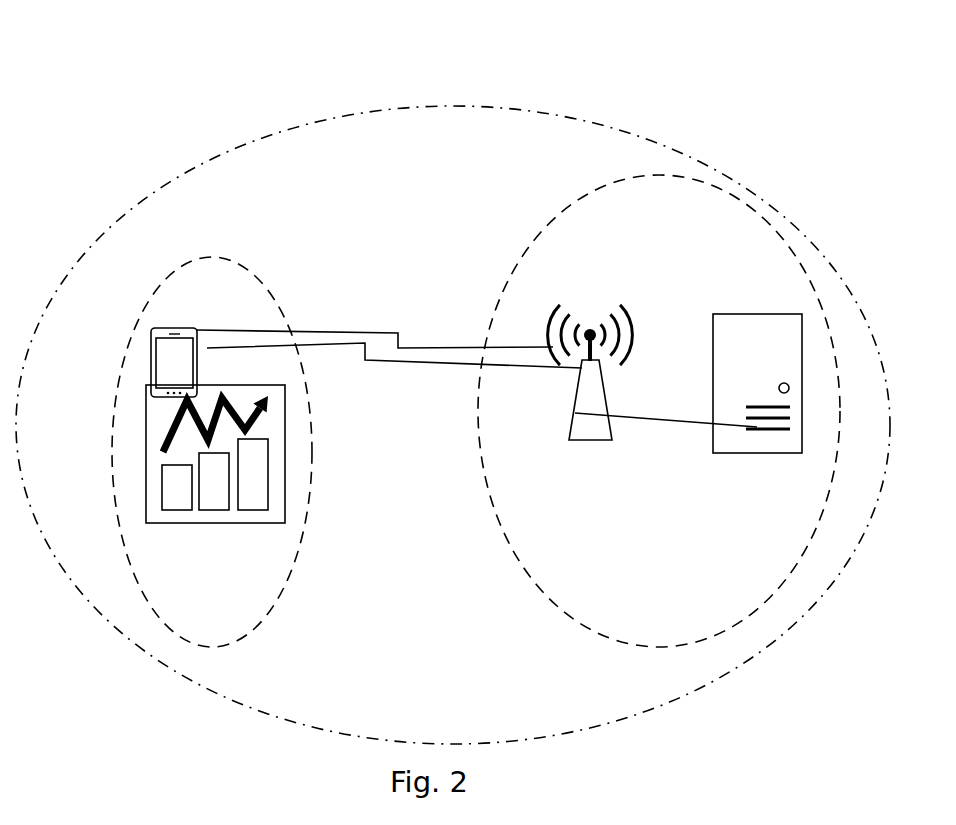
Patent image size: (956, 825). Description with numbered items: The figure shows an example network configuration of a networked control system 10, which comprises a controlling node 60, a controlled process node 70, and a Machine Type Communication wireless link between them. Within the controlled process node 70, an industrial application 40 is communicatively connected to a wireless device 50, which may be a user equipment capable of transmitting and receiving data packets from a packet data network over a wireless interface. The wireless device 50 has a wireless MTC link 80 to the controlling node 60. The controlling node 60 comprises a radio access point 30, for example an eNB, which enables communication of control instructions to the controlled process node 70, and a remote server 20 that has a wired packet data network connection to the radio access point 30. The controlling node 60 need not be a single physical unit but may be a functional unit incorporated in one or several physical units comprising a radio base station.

The networked control system 10 is at (458, 82).
The remote server 20 is at (757, 342).
The radio access point 30 is at (575, 413).
The industrial application 40 is at (157, 437).
The wireless device 50 is at (175, 345).
The controlling node 60 is at (728, 220).
The controlled process node 70 is at (295, 483).
The wireless MTC link 80 is at (322, 337).